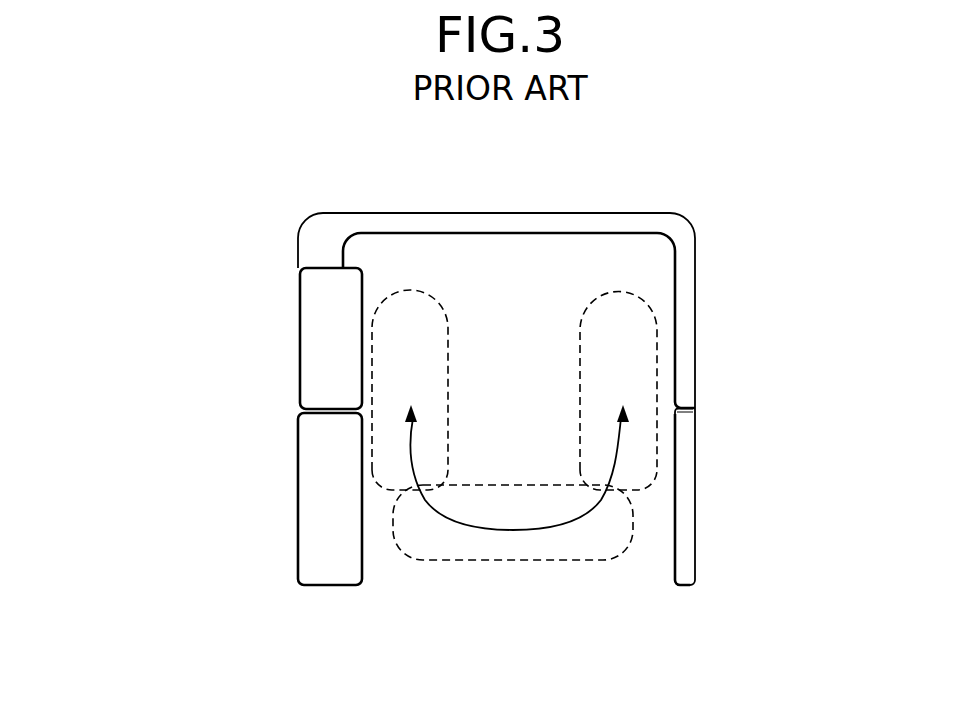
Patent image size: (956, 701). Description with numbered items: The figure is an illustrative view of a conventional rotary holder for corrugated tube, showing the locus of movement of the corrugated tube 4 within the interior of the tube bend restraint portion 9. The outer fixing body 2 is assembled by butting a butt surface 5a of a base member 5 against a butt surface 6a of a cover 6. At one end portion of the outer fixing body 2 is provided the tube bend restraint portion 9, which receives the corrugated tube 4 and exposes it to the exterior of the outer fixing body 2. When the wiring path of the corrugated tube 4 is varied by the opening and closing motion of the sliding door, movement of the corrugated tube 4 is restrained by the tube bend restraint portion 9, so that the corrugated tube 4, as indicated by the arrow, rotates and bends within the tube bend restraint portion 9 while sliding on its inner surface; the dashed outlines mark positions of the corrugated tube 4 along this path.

The outer fixing body 2 is at (217, 240).
The corrugated tube 4 is at (412, 290).
The base member 5 is at (290, 506).
The butt surface 5a is at (330, 408).
The cover 6 is at (287, 300).
The butt surface 6a is at (330, 424).
The tube bend restraint portion 9 is at (690, 534).